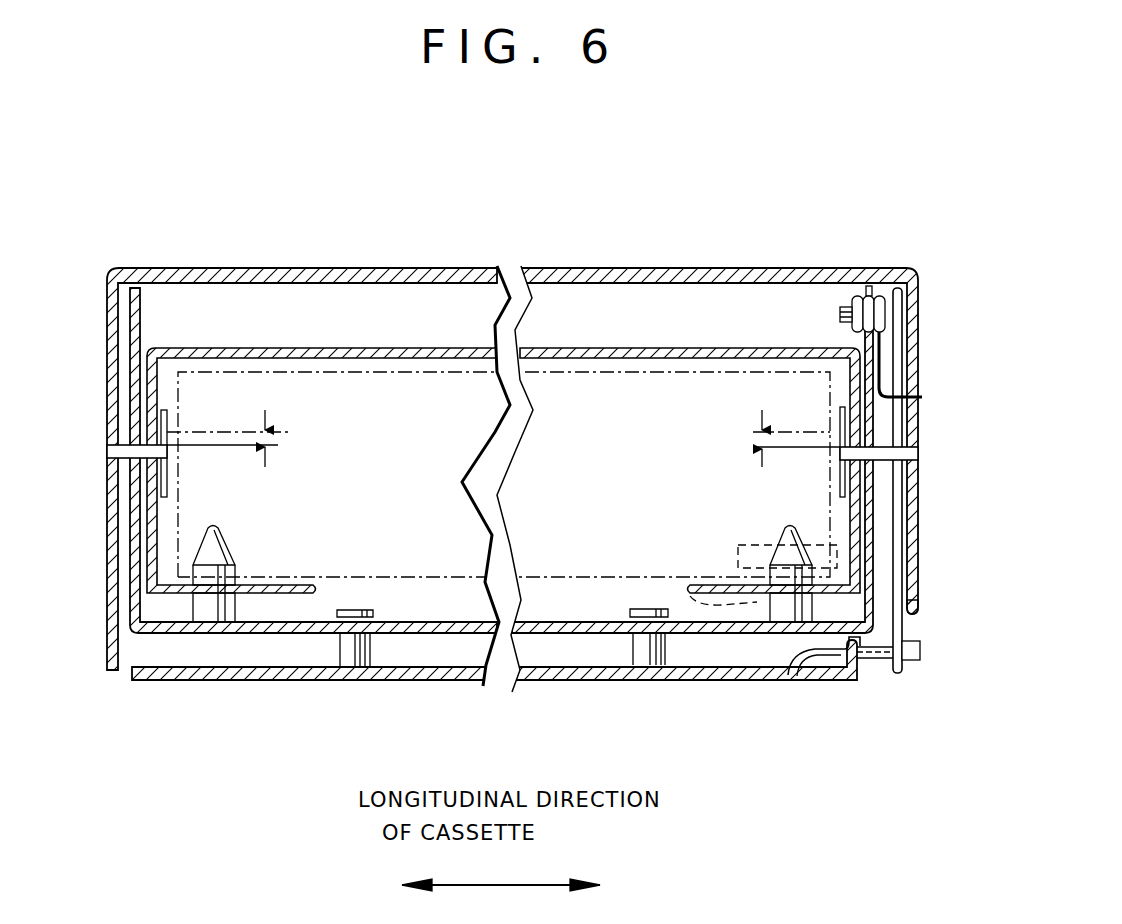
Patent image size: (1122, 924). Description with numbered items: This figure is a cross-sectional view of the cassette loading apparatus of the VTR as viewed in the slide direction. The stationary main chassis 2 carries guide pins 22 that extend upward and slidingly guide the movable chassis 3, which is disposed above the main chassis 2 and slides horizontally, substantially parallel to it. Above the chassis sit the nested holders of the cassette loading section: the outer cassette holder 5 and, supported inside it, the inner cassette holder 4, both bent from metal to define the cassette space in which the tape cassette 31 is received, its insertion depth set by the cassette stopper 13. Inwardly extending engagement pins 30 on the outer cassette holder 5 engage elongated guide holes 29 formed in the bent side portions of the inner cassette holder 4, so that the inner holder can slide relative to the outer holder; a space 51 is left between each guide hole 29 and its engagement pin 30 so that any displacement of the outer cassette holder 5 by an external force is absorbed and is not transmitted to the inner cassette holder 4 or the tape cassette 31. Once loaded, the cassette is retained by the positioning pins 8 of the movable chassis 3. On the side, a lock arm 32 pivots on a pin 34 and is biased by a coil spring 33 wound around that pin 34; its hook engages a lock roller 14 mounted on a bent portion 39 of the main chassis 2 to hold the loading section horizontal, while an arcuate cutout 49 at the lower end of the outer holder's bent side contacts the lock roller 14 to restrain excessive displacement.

The main chassis 2 is at (315, 681).
The movable chassis 3 is at (585, 634).
The inner cassette holder 4 is at (395, 348).
The outer cassette holder 5 is at (632, 268).
The positioning pins 8 is at (218, 530).
The cassette stopper 13 is at (740, 557).
The lock roller 14 is at (896, 600).
The guide pins 22 is at (365, 650).
The elongated guide holes 29 is at (150, 470).
The engagement pins 30 is at (152, 452).
The tape cassette 31 is at (618, 378).
The lock arm 32 is at (878, 662).
The coil spring 33 is at (862, 296).
The pin 34 is at (840, 314).
The bent portion 39 is at (820, 652).
The arcuate cutout 49 is at (913, 616).
The space 51 is at (274, 440).